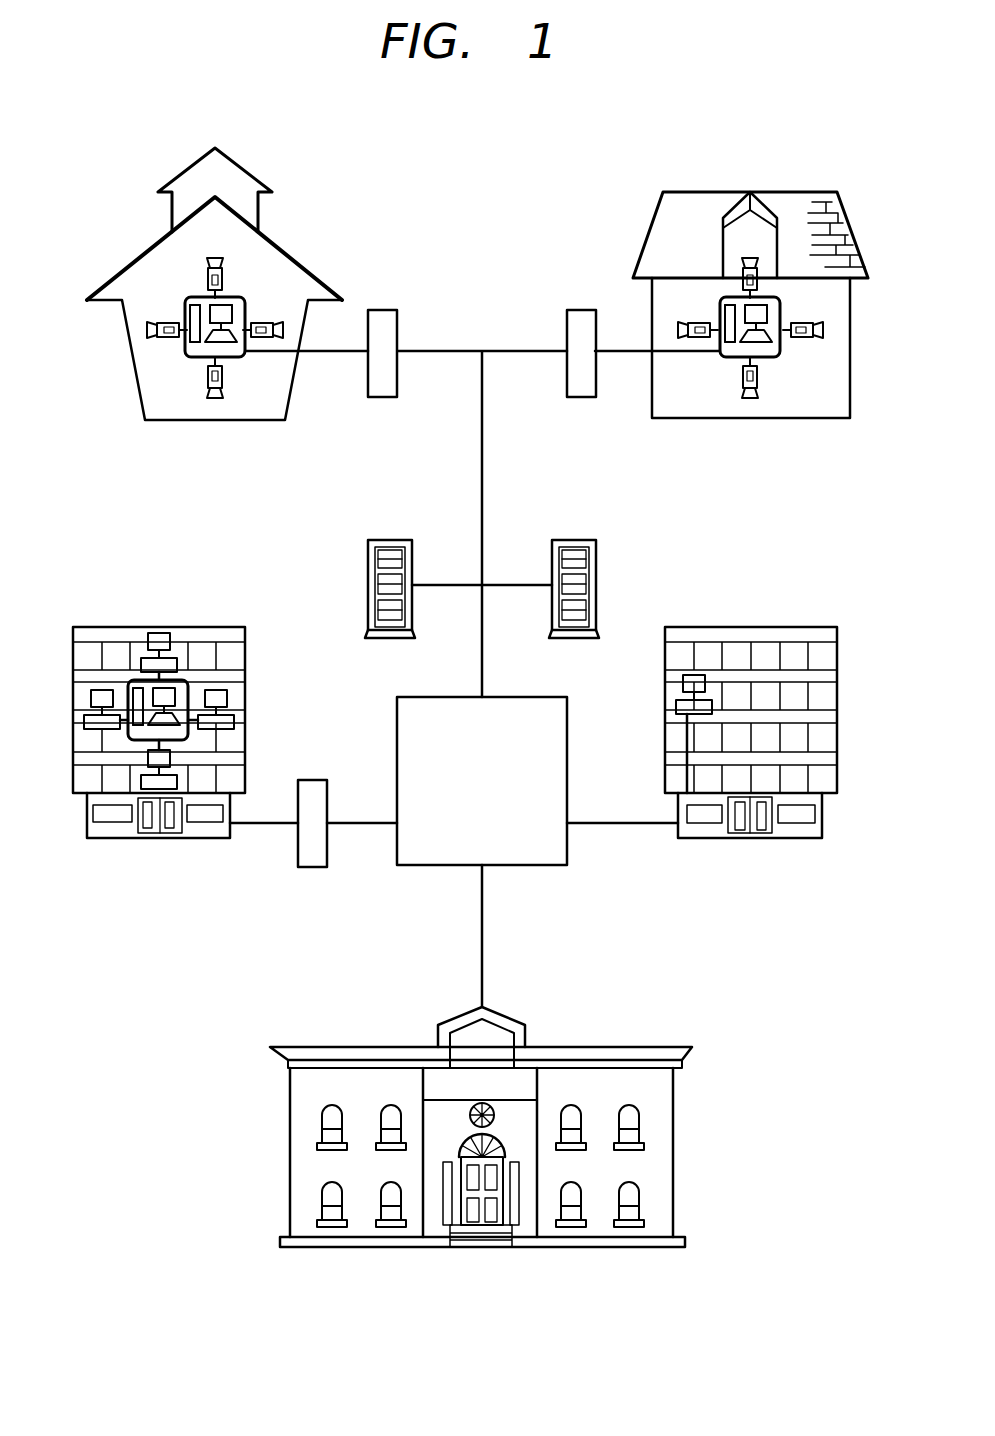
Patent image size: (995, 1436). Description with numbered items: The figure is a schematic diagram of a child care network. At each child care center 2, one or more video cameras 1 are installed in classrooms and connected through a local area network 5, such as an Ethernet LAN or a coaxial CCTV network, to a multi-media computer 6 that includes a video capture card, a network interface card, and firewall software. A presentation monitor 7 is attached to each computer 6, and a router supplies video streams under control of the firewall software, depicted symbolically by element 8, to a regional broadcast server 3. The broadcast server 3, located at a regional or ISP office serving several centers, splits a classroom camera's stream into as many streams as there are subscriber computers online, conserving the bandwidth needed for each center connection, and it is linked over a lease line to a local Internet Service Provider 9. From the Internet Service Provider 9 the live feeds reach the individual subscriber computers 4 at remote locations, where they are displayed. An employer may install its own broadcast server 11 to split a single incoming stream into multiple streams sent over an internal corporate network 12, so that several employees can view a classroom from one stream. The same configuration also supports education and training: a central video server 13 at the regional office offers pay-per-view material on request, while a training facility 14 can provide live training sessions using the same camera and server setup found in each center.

The video camera 1 is at (265, 325).
The child care center 2 is at (128, 202).
The regional broadcast server 3 is at (370, 594).
The subscriber computer 4 is at (227, 698).
The local area network 5 is at (483, 315).
The computer 6 is at (192, 312).
The presentation monitor 7 is at (235, 330).
The firewall software 8 is at (383, 310).
The Internet Service Provider 9 is at (558, 740).
The broadcast server 11 is at (140, 698).
The internal network 12 is at (377, 709).
The central video server 13 is at (592, 594).
The training facility 14 is at (625, 1047).